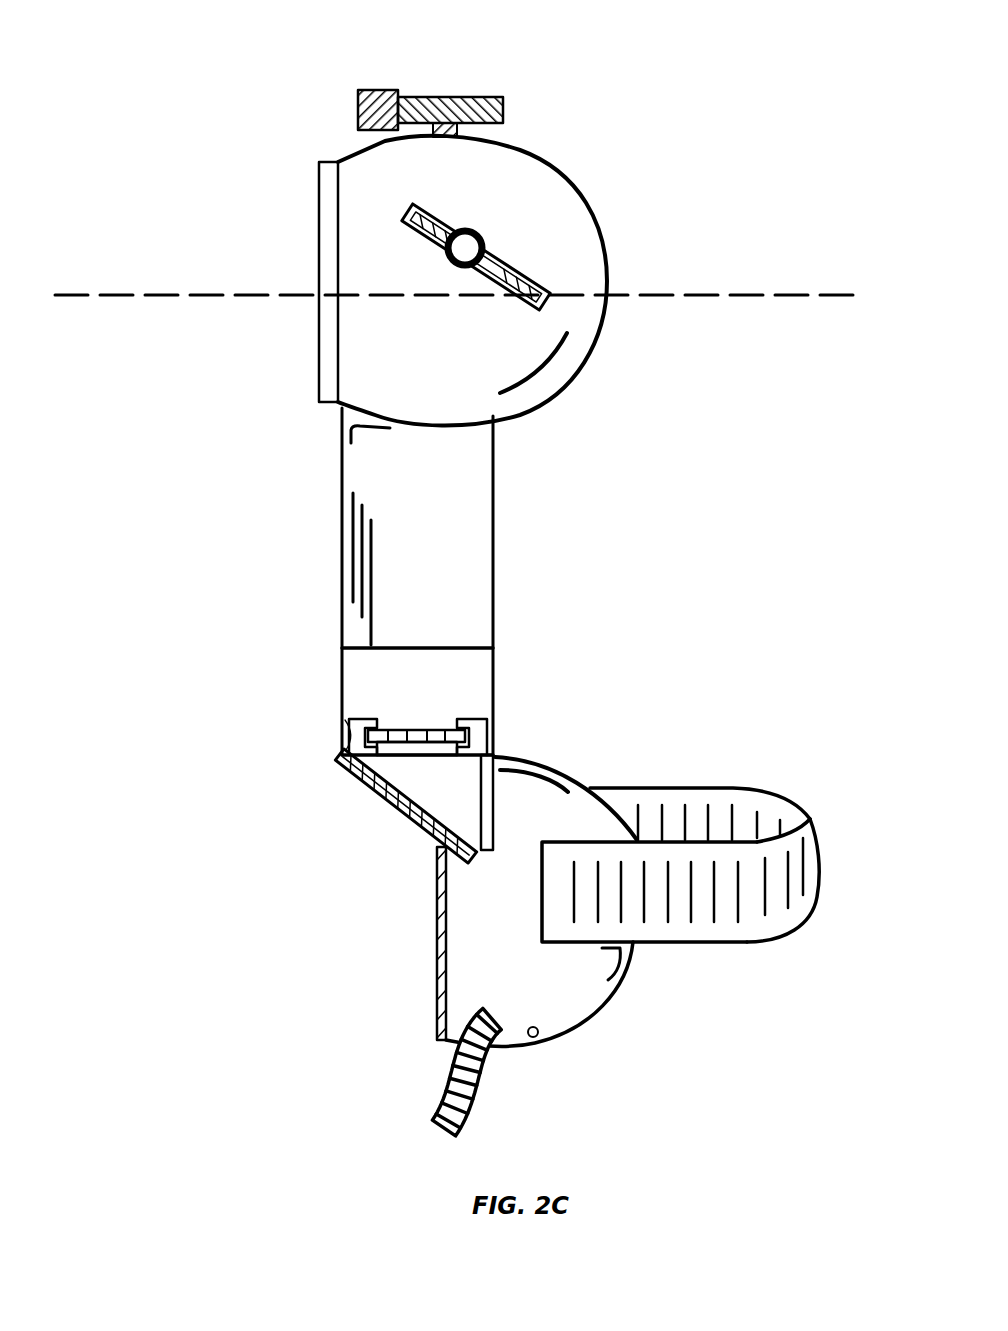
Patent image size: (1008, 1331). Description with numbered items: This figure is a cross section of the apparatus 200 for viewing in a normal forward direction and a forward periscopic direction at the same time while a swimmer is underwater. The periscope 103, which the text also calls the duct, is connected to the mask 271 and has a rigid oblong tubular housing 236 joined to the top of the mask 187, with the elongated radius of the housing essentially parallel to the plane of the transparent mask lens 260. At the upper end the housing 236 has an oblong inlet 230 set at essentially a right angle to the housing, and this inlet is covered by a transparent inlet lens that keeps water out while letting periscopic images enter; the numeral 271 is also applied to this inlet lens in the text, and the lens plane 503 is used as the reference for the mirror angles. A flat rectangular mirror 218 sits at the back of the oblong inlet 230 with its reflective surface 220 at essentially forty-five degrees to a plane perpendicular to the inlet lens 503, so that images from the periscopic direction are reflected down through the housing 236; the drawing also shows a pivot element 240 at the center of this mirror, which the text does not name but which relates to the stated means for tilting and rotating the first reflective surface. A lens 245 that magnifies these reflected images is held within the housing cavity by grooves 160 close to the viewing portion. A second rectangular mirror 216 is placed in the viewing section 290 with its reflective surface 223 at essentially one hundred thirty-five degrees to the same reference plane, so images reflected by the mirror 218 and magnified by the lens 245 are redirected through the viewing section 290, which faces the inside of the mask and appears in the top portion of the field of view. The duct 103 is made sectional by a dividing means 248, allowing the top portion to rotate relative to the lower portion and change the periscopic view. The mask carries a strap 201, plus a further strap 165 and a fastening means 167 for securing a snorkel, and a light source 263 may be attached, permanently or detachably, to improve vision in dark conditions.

The apparatus 200 is at (266, 148).
The light source 263 is at (427, 97).
The flat rectangular mirror 218 is at (443, 212).
The pivot 240 is at (500, 260).
The oblong inlet 230 is at (607, 295).
The reflective surface 220 is at (567, 333).
The mask 271 is at (317, 267).
The transparent inlet lens 503 is at (485, 287).
The periscope 103 is at (556, 553).
The oblong tubular housing 236 is at (342, 558).
The dividing means 248 is at (457, 648).
The lens 245 is at (427, 731).
The reflective surface 223 is at (345, 720).
The grooves 160 is at (493, 723).
The top of the mask 187 is at (493, 752).
The viewing section 290 is at (493, 808).
The second rectangular mirror 216 is at (342, 757).
The transparent mask lens 260 is at (437, 938).
The strap 201 is at (710, 943).
The fastening means 167 is at (538, 1032).
The strap 165 is at (427, 1103).